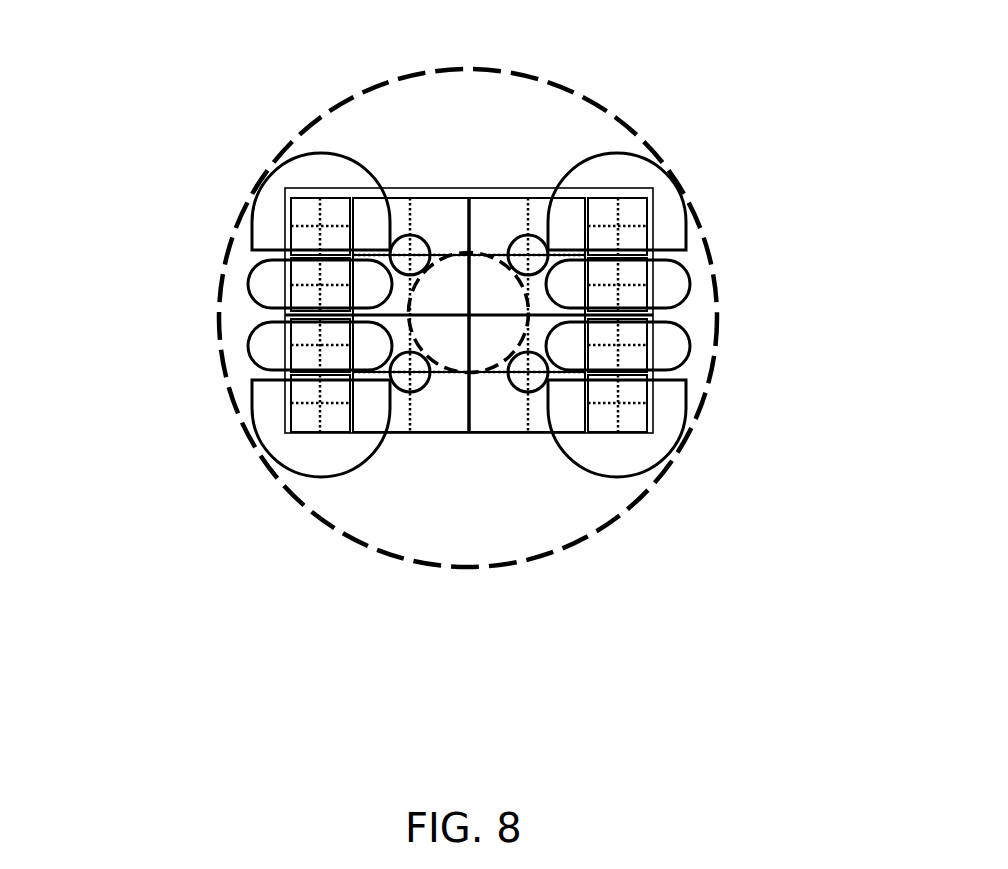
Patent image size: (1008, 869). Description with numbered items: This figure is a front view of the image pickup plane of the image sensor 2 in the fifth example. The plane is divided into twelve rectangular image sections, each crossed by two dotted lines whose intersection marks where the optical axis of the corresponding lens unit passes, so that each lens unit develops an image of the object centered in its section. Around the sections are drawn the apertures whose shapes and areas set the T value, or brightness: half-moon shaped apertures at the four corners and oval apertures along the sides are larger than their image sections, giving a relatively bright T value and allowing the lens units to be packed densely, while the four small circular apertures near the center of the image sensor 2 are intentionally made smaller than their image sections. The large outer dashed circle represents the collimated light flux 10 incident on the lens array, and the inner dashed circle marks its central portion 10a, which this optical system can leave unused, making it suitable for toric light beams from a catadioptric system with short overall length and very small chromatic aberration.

The image sensor 2 is at (483, 188).
The collimated light flux 10 is at (450, 568).
The central portion 10a is at (469, 432).